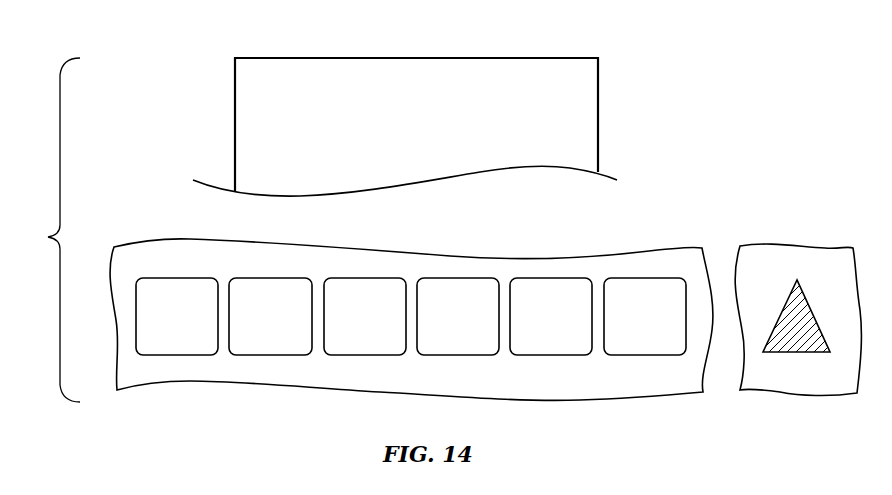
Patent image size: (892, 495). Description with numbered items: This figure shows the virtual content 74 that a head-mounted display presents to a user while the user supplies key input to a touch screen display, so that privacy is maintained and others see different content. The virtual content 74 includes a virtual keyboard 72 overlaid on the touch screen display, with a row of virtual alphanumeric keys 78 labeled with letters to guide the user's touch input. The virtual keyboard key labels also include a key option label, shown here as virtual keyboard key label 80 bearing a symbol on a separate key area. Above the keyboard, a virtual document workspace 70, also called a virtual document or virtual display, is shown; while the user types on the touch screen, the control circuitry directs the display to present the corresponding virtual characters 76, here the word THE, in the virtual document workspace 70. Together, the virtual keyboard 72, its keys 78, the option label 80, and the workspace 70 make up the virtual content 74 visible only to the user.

The virtual document workspace 70 is at (258, 62).
The virtual keyboard 72 is at (411, 310).
The virtual content 74 is at (53, 230).
The virtual characters 76 is at (314, 75).
The virtual alphanumeric keys 78 is at (250, 356).
The virtual keyboard key label 80 is at (765, 374).